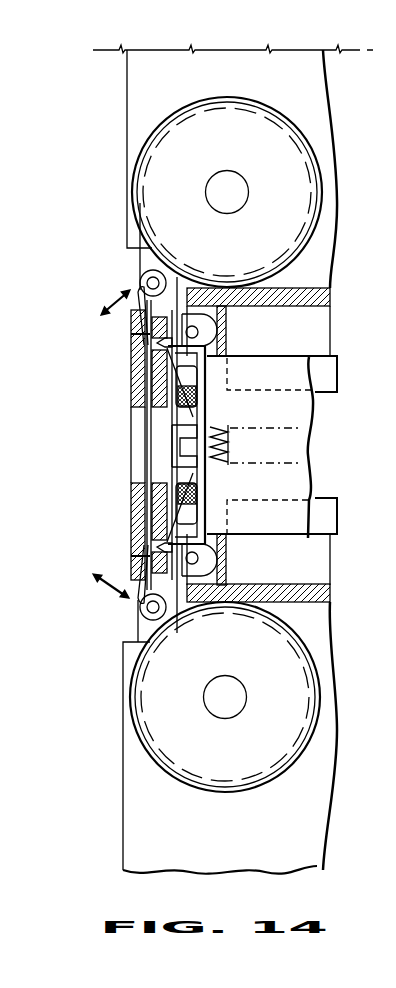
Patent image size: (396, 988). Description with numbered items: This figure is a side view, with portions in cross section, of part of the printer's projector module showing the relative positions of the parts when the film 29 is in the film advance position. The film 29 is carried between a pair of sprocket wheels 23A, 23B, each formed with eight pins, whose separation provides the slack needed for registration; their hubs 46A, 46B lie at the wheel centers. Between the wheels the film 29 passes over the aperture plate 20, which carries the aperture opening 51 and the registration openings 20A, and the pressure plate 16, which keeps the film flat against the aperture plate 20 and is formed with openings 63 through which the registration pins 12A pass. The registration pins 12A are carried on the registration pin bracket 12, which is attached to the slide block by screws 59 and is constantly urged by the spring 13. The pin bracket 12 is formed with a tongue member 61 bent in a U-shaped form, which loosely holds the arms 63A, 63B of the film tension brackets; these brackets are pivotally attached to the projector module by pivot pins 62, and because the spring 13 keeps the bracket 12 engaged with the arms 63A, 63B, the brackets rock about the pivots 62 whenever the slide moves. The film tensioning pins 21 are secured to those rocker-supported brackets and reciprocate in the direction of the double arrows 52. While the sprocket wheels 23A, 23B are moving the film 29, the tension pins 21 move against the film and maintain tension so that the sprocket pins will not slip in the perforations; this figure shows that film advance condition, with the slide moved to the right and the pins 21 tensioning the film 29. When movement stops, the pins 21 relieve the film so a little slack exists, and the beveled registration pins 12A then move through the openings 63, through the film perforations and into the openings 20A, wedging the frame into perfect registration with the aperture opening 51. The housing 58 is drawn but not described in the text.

The registration pin bracket 12 is at (204, 416).
The registration pins 12A is at (183, 280).
The spring 13 is at (229, 446).
The pressure plate 16 is at (157, 368).
The aperture plate 20 is at (133, 393).
The openings in the aperture plate 20A is at (153, 342).
The film tensioning pins 21 is at (141, 276).
The sprocket wheel 23A is at (233, 774).
The sprocket wheel 23B is at (233, 149).
The film 29 is at (368, 192).
The lower axle 46A is at (218, 708).
The upper axle 46B is at (218, 186).
The aperture opening 51 is at (140, 413).
The double arrows 52 is at (108, 300).
The housing 58 is at (269, 448).
The screws 59 is at (194, 370).
The tongue member 61 is at (177, 442).
The pivot pins 62 is at (199, 331).
The openings in the pressure plate 63 is at (147, 334).
The arm 63A is at (192, 492).
The arm 63B is at (196, 400).